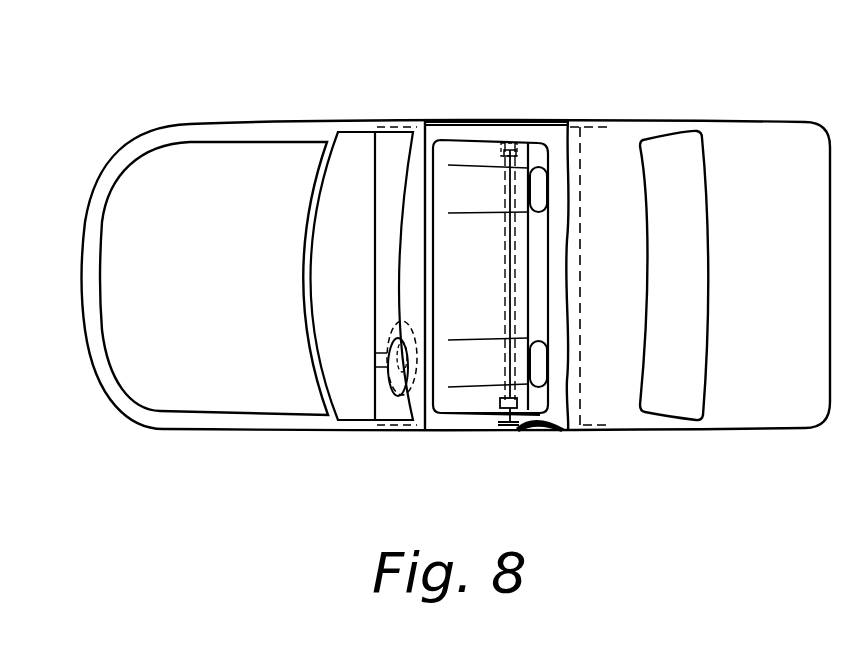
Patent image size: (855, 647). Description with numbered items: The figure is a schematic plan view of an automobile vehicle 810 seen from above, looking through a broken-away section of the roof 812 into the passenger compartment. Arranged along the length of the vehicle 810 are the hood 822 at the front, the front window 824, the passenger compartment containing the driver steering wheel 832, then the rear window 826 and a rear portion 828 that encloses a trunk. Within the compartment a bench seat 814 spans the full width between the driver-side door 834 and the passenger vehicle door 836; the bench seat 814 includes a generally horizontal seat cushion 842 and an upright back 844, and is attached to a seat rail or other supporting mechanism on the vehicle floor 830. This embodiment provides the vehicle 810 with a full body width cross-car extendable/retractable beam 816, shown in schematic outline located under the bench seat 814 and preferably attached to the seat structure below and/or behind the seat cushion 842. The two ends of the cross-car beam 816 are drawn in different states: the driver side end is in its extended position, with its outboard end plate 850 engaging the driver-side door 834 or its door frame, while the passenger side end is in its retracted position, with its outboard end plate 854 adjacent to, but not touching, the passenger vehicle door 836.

The automobile vehicle 810 is at (357, 106).
The roof 812 is at (622, 145).
The bench seat 814 is at (455, 414).
The cross-car extendable/retractable beam 816 is at (527, 150).
The hood 822 is at (222, 268).
The front window 824 is at (372, 268).
The rear window 826 is at (706, 240).
The rear portion 828 is at (782, 262).
The vehicle floor 830 is at (437, 415).
The driver steering wheel 832 is at (377, 383).
The driver-side door 834 is at (502, 430).
The passenger vehicle door 836 is at (472, 120).
The seat cushion 842 is at (498, 286).
The upright back 844 is at (550, 270).
The outboard end plate 850 is at (552, 430).
The outboard end plate 854 is at (510, 143).